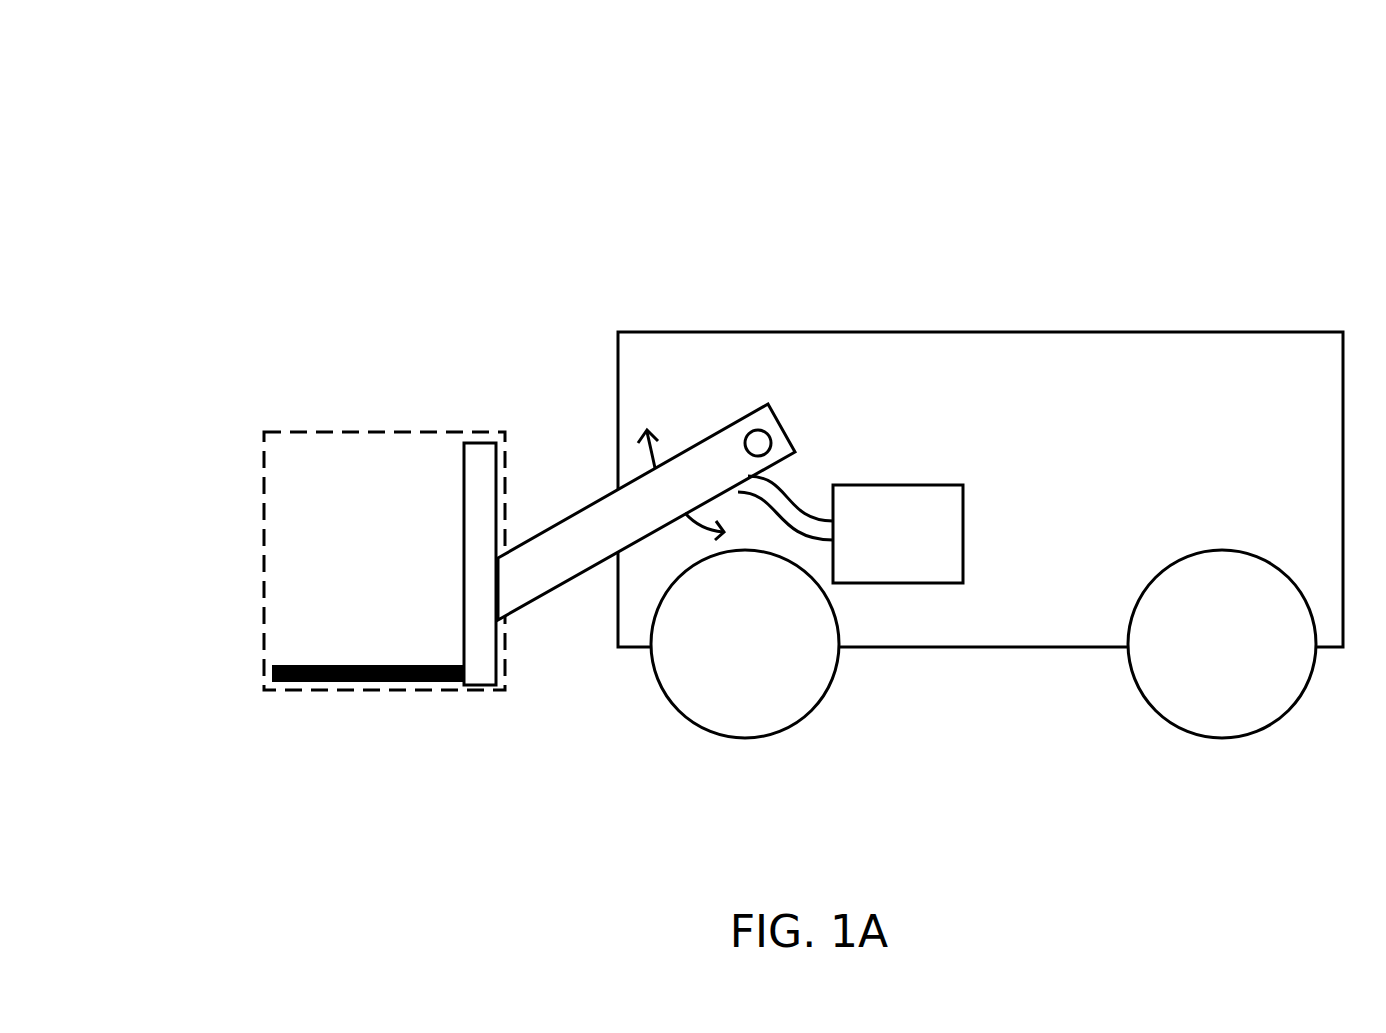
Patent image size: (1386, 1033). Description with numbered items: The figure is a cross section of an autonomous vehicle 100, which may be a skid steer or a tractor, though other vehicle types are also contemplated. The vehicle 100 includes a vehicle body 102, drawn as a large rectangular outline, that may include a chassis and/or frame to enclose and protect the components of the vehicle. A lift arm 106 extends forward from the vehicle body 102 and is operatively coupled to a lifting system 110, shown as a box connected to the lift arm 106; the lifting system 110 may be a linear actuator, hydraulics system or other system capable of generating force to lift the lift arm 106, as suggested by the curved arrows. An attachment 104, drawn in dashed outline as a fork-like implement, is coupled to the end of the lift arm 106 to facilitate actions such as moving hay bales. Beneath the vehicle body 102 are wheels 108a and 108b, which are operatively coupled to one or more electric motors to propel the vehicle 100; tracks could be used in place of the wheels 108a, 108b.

The autonomous vehicle 100 is at (180, 85).
The vehicle body 102 is at (710, 330).
The attachment 104 is at (283, 432).
The lift arm 106 is at (545, 603).
The wheel 108a is at (828, 692).
The wheel 108b is at (1153, 712).
The lifting system 110 is at (850, 529).